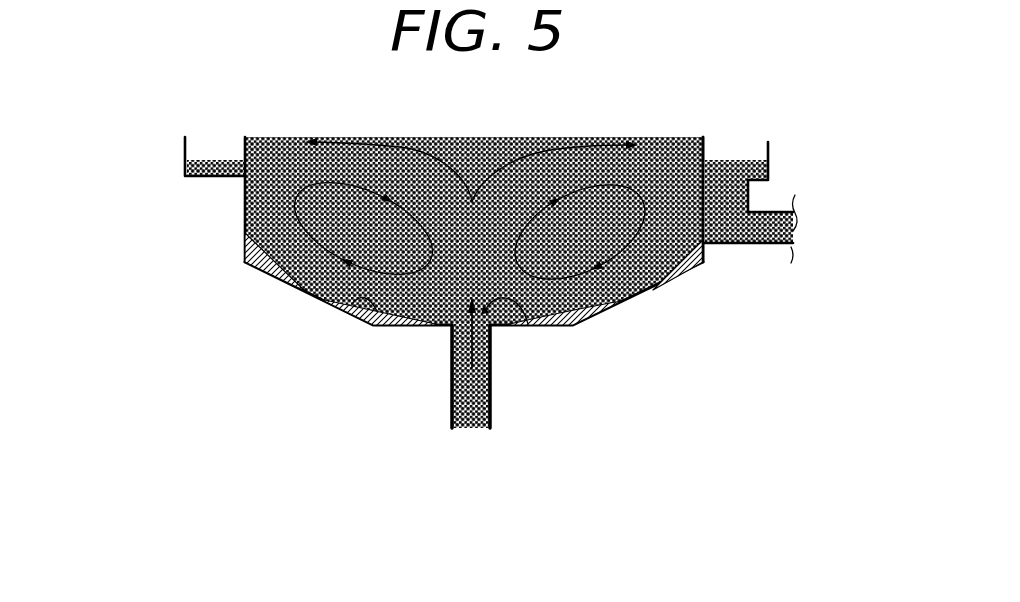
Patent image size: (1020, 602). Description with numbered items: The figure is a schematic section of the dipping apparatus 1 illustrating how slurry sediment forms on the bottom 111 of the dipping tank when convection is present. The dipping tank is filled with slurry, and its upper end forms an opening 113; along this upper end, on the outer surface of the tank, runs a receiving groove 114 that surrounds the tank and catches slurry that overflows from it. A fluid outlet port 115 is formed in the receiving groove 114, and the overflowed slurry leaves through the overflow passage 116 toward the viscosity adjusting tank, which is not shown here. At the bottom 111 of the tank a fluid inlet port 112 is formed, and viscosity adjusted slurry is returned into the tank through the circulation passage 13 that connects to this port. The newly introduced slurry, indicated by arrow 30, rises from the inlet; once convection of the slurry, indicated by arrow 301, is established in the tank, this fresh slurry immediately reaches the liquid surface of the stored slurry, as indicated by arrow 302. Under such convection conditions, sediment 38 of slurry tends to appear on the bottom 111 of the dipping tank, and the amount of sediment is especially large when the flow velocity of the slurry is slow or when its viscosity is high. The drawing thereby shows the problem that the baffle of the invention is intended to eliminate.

The dipping apparatus 1 is at (273, 344).
The circulation passage 13 is at (491, 400).
The newly introduced slurry 30 is at (463, 358).
The sediment 38 is at (245, 263).
The bottom 111 is at (373, 327).
The fluid inlet port 112 is at (533, 325).
The opening 113 is at (703, 162).
The receiving groove 114 is at (185, 146).
The fluid outlet port 115 is at (731, 174).
The overflow passage 116 is at (759, 248).
The arrow indicating convection 301 is at (629, 238).
The arrow indicating flow to liquid surface 302 is at (537, 153).